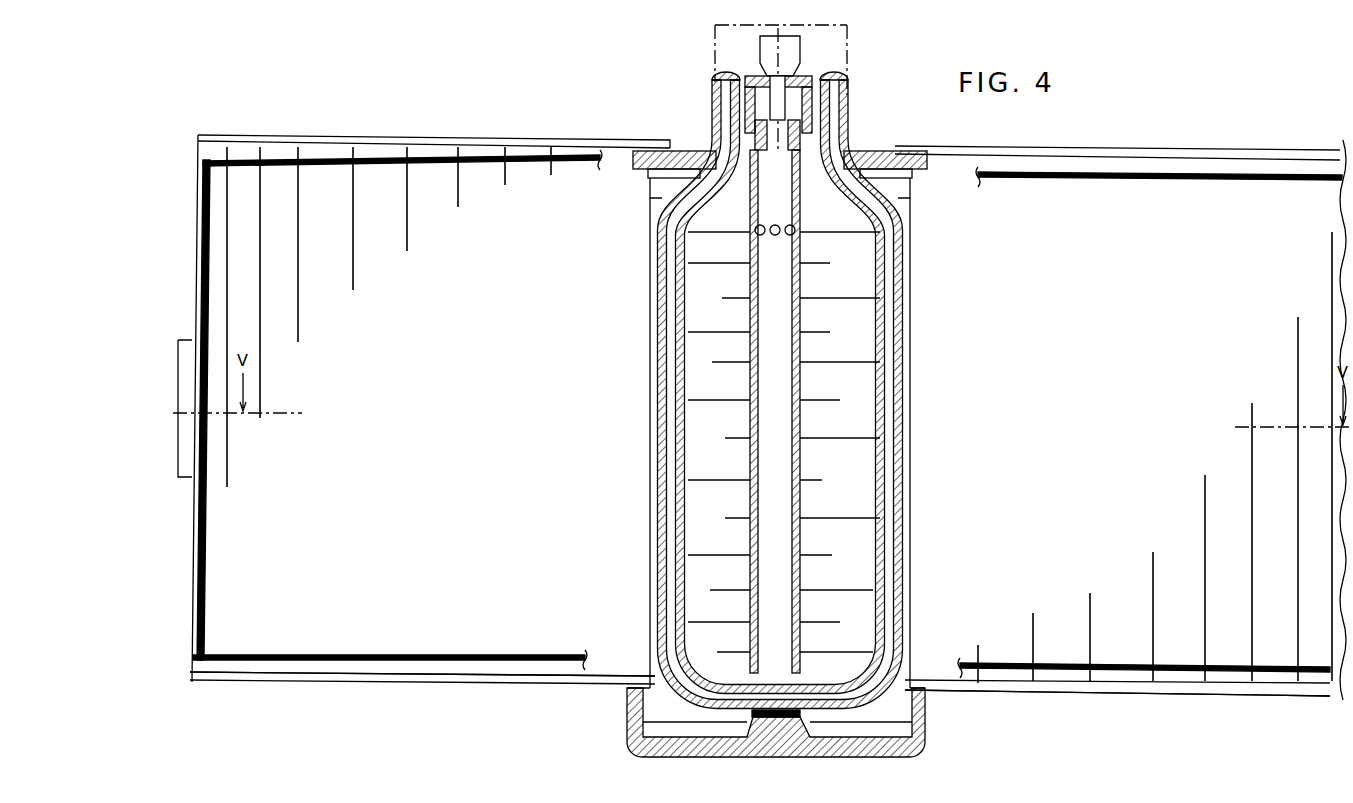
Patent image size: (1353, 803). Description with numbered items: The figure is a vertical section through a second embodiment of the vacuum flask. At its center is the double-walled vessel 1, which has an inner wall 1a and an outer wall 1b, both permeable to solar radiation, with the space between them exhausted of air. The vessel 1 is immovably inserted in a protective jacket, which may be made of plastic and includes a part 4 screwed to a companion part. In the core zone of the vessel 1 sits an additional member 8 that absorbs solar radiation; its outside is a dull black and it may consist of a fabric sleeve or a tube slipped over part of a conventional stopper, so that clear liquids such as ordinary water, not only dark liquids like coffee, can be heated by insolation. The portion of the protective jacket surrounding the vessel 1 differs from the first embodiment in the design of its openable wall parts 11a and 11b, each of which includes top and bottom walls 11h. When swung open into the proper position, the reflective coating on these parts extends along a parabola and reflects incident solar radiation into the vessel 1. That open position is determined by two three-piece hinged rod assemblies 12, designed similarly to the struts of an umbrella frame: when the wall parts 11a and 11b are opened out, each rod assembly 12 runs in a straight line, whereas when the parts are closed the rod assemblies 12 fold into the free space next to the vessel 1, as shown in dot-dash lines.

The double-walled vessel 1 is at (647, 369).
The inner wall 1a is at (678, 323).
The outer wall 1b is at (660, 402).
The protective jacket part 4 is at (748, 705).
The additional member absorbing solar radiation 8 is at (765, 421).
The openable wall part 11a is at (401, 137).
The openable wall part 11b is at (1183, 167).
The top and bottom walls 11h is at (488, 144).
The three-piece hinged rod assembly 12 is at (437, 170).